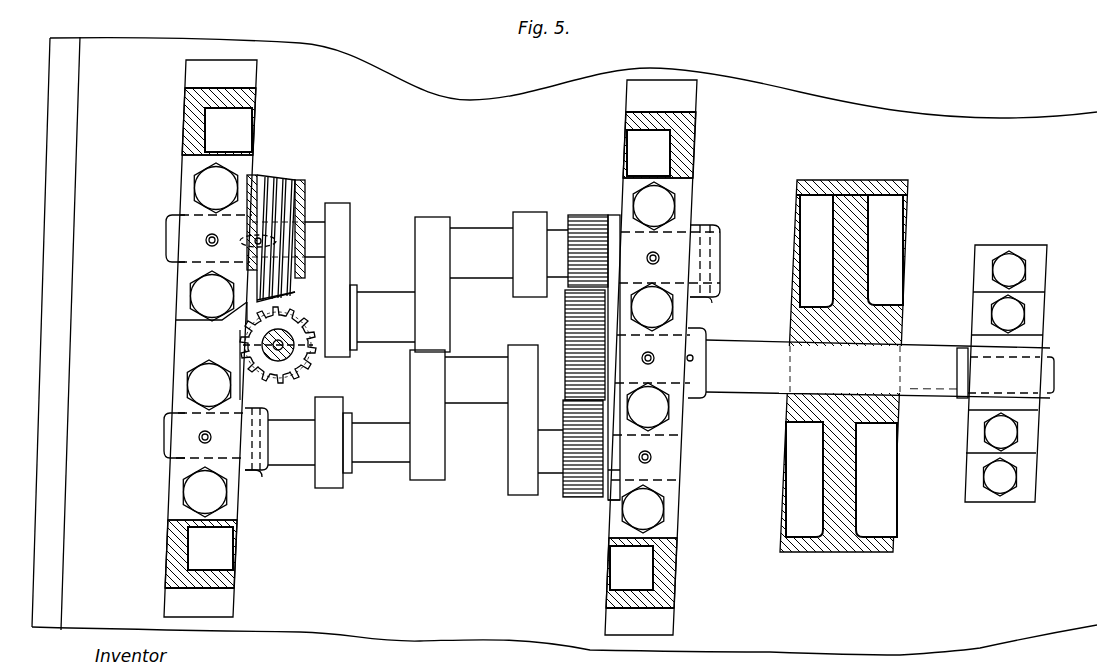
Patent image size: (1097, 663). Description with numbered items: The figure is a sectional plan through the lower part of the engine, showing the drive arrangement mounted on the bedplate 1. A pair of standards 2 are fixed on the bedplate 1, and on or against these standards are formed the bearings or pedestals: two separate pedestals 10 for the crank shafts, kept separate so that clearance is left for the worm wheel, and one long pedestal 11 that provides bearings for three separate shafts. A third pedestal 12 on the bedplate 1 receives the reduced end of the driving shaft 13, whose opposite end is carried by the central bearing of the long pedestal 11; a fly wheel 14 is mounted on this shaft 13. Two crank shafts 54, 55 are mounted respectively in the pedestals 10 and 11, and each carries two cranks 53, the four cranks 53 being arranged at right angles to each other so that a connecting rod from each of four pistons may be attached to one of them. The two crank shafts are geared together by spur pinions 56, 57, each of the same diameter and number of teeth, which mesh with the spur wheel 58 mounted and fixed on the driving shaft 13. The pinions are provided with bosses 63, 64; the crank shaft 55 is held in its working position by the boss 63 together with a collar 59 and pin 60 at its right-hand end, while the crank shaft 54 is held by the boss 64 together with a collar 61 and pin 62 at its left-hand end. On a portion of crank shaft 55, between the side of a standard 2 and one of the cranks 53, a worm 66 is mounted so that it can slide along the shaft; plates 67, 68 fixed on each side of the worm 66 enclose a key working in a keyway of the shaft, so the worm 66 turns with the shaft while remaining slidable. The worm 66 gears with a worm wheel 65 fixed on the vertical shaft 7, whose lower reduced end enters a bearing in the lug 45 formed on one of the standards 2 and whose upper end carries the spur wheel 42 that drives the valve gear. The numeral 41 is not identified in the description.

The bedplate 1 is at (975, 476).
The standard 2 is at (190, 118).
The shaft 7 is at (290, 384).
The pedestal 10 is at (185, 186).
The long pedestal 11 is at (676, 205).
The third pedestal 12 is at (1040, 268).
The shaft 13 is at (871, 363).
The fly wheel 14 is at (858, 238).
The worm shaft 41 is at (313, 245).
The spur wheel 42 is at (248, 247).
The lug 45 is at (251, 352).
The crank 53 is at (484, 347).
The crank shaft 54 is at (164, 436).
The crank shaft 55 is at (168, 246).
The spur pinion 56 is at (585, 215).
The spur pinion 57 is at (577, 497).
The spur wheel 58 is at (566, 319).
The collar 59 is at (724, 235).
The pin 60 is at (710, 296).
The collar 61 is at (262, 434).
The pin 62 is at (257, 470).
The boss 63 is at (621, 232).
The boss 64 is at (612, 470).
The worm wheel 65 is at (302, 366).
The worm 66 is at (290, 318).
The plate 67 is at (251, 240).
The plate 68 is at (306, 200).